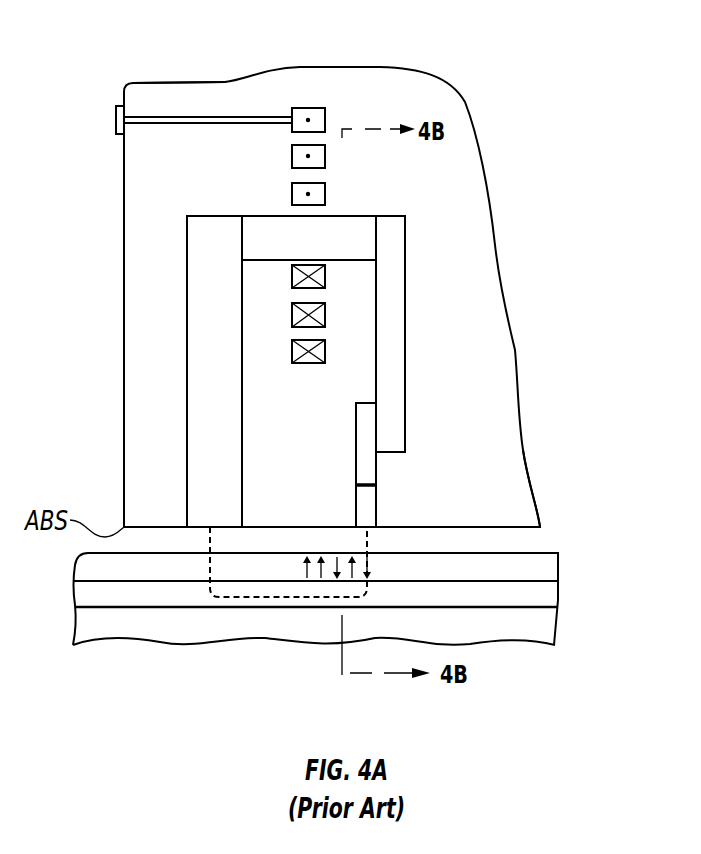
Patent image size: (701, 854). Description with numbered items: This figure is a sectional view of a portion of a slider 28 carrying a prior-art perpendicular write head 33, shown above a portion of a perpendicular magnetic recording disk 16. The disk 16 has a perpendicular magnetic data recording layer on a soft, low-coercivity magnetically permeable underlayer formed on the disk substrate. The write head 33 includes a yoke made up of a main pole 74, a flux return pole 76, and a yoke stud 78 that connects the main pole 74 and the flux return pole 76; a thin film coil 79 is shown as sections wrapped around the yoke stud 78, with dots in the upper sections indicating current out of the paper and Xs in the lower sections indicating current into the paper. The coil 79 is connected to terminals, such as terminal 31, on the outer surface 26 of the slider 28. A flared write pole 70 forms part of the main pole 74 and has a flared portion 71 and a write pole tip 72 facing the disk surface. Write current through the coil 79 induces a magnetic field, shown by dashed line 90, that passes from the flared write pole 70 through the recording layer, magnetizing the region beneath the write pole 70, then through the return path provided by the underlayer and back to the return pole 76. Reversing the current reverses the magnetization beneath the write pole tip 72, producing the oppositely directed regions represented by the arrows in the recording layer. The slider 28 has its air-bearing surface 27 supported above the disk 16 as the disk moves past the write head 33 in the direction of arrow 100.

The perpendicular magnetic recording disk 16 is at (80, 627).
The outer surface of slider 26 is at (124, 283).
The air-bearing surface 27 is at (522, 527).
The slider 28 is at (131, 93).
The terminal 31 is at (116, 122).
The perpendicular write head 33 is at (486, 60).
The flared write pole 70 is at (360, 425).
The flared portion 71 is at (360, 470).
The write pole tip 72 is at (360, 508).
The main pole 74 is at (398, 377).
The flux return pole 76 is at (198, 377).
The yoke stud 78 is at (355, 222).
The thin film coil 79 is at (327, 108).
The magnetic field 90 is at (215, 605).
The arrow indicating disk motion direction 100 is at (582, 568).